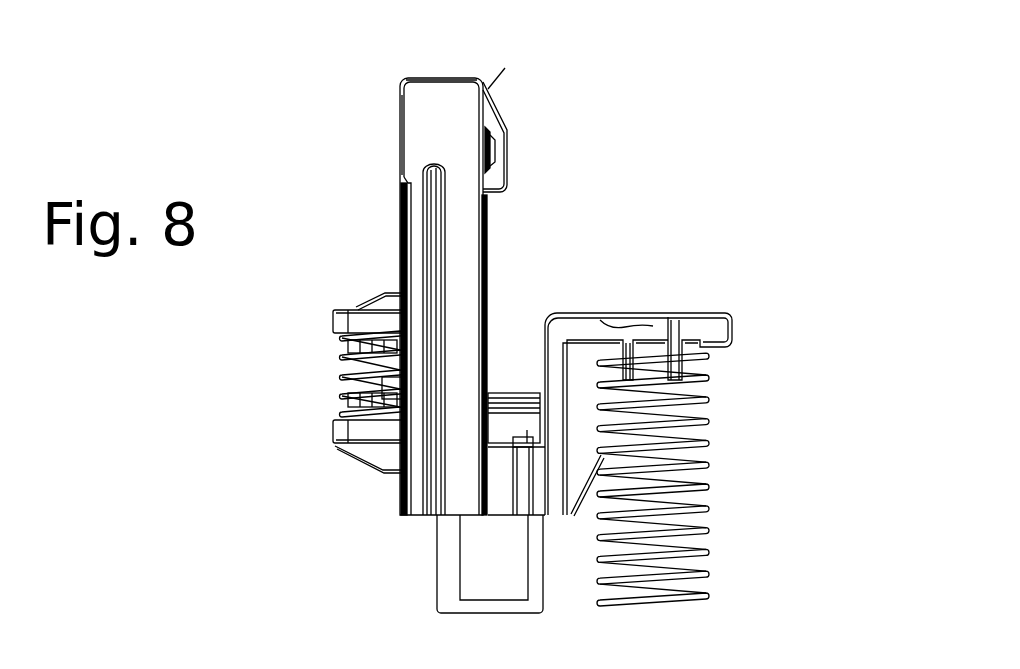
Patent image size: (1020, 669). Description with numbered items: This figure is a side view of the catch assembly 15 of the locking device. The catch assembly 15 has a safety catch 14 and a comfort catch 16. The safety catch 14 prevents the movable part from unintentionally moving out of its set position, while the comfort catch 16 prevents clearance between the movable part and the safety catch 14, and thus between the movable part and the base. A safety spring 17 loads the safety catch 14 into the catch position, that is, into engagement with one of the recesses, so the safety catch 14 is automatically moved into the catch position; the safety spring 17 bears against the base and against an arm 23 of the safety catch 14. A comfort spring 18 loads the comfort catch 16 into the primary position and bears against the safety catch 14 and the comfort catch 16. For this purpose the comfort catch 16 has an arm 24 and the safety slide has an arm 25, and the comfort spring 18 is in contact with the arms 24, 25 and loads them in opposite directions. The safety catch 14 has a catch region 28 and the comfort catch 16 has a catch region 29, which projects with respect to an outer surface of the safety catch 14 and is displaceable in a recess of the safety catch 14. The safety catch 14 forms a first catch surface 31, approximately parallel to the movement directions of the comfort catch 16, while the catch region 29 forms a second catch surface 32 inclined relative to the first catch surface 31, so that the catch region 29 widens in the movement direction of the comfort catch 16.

The safety catch 14 is at (437, 115).
The catch assembly 15 is at (365, 204).
The comfort catch 16 is at (500, 158).
The safety spring 17 is at (712, 496).
The comfort spring 18 is at (340, 377).
The arm 23 is at (728, 304).
The arm 24 is at (339, 322).
The arm 25 is at (334, 432).
The catch region 28 is at (396, 96).
The catch region 29 is at (509, 120).
The first catch surface 31 is at (400, 148).
The second catch surface 32 is at (490, 88).